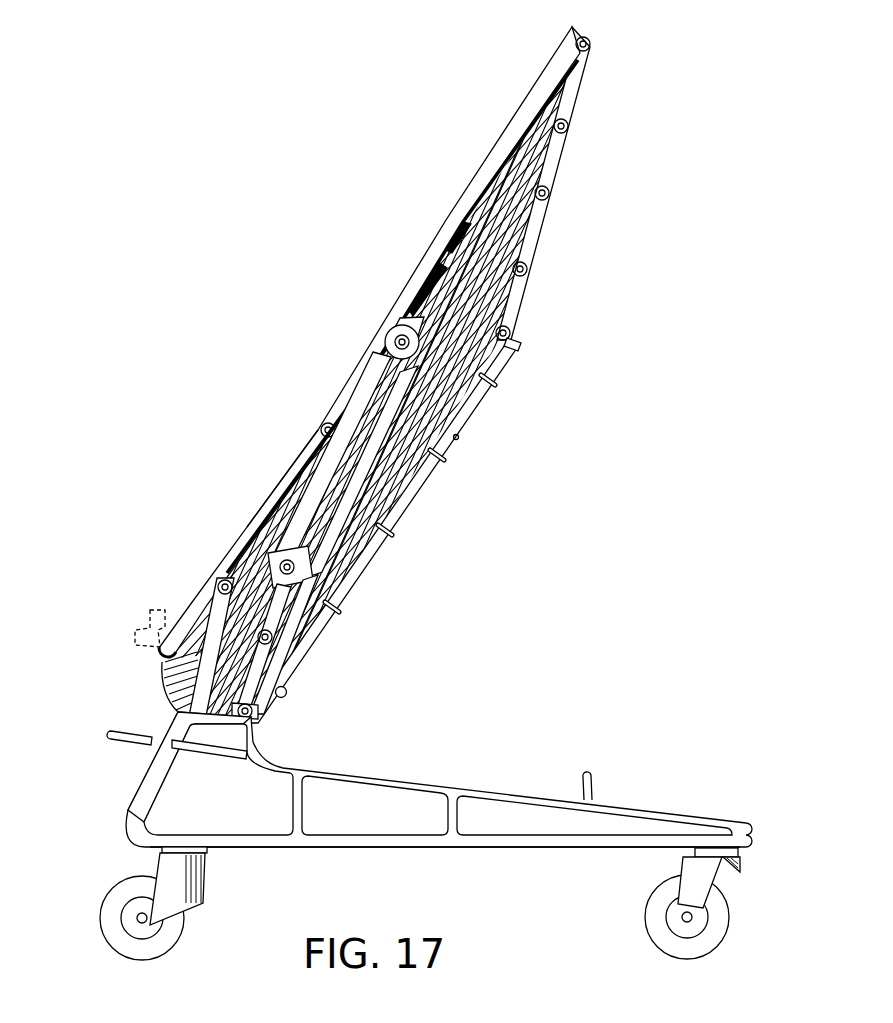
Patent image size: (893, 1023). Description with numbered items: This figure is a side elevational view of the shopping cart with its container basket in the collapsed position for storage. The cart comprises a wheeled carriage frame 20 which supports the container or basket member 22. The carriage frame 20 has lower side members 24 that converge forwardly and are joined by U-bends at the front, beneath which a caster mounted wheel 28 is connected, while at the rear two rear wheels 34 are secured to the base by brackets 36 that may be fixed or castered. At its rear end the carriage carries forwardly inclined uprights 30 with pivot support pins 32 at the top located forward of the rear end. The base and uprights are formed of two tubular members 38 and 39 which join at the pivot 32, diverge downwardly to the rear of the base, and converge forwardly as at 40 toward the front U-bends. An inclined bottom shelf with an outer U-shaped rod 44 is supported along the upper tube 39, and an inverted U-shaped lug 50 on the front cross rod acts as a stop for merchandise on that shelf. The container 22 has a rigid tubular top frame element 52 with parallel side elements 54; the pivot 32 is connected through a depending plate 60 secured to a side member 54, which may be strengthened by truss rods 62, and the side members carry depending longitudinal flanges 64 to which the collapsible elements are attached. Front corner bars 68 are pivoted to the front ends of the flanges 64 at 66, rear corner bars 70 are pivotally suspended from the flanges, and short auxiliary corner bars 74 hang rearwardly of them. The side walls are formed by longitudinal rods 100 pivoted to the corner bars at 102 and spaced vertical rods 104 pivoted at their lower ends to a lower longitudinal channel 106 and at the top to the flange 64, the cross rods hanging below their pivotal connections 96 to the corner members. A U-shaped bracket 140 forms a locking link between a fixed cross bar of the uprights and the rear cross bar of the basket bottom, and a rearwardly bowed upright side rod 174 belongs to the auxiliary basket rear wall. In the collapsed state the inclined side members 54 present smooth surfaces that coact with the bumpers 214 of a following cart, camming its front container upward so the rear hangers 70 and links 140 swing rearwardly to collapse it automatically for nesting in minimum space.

The wheeled carriage frame 20 is at (118, 800).
The container basket member 22 is at (563, 198).
The lower side members 24 is at (466, 852).
The caster mounted wheel 28 is at (655, 913).
The uprights 30 is at (130, 717).
The pivot support pin 32 is at (395, 342).
The rear wheel 34 is at (115, 915).
The bracket 36 is at (198, 876).
The tubular member 38 is at (305, 500).
The tubular member 39 is at (357, 477).
The converging portions 40 is at (523, 842).
The outer U-shaped rod 44 is at (108, 738).
The inverted U-shaped lug 50 is at (588, 773).
The basket top frame element 52 is at (414, 253).
The side element 54 is at (323, 413).
The depending plate 60 is at (399, 326).
The truss rod 62 is at (444, 287).
The depending longitudinal flange 64 is at (561, 82).
The pivot 66 is at (590, 44).
The front corner bar 68 is at (552, 164).
The rear corner bar 70 is at (258, 663).
The auxiliary corner bar 74 is at (218, 605).
The pivotal connection 96 is at (509, 328).
The longitudinal rod 100 is at (512, 234).
The pivot 102 is at (568, 126).
The vertical rod 104 is at (527, 265).
The lower longitudinal channel 106 is at (460, 403).
The U-shaped bracket 140 is at (278, 706).
The bowed upright side rod 174 is at (166, 687).
The bumper 214 is at (142, 625).